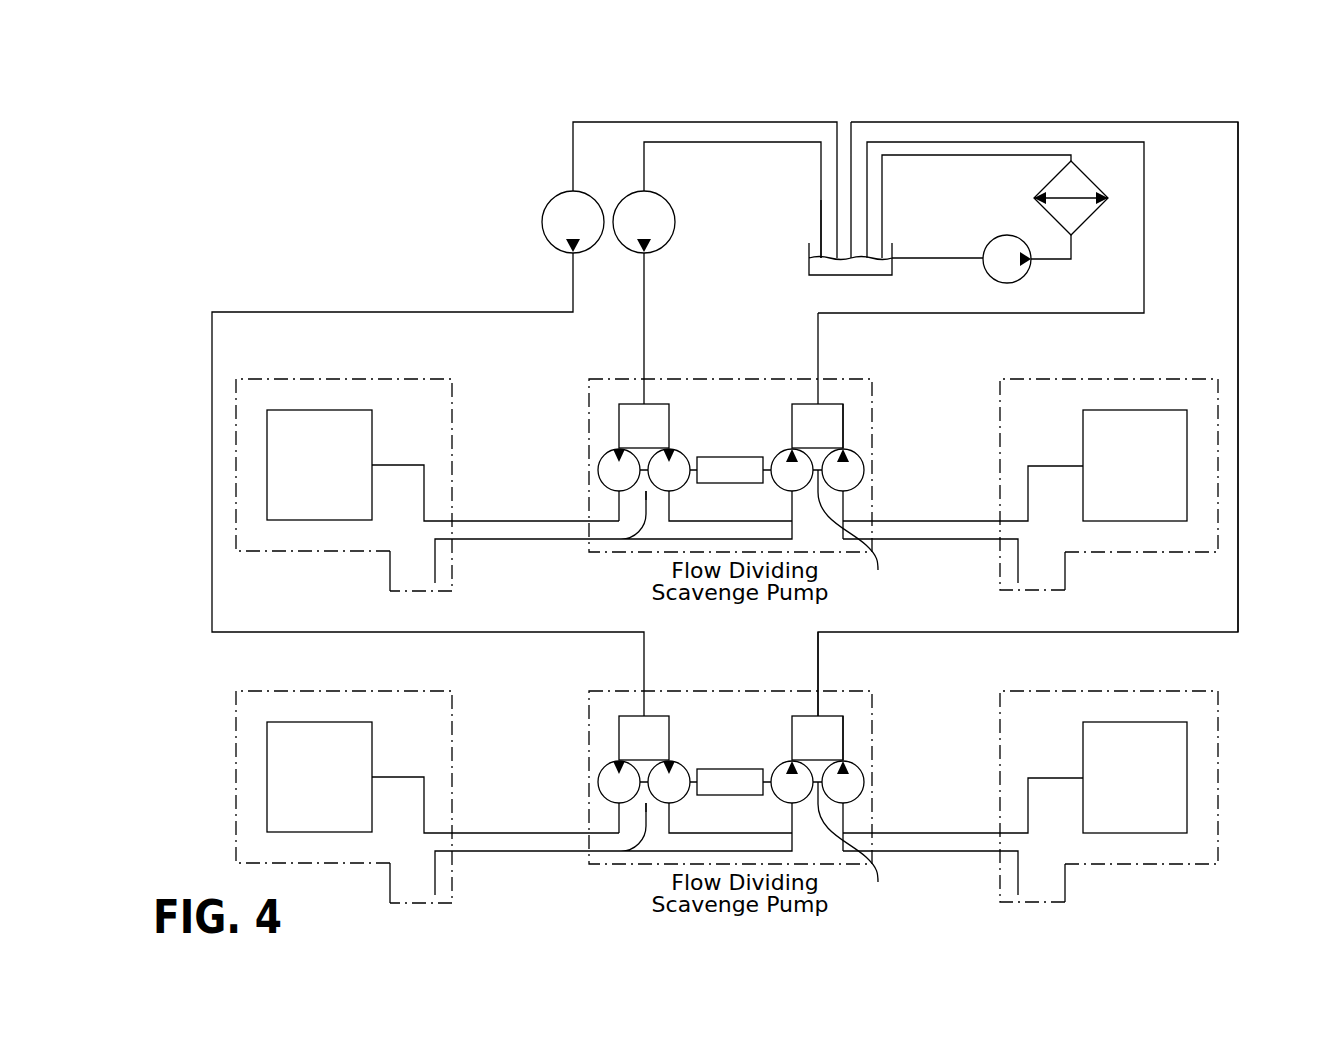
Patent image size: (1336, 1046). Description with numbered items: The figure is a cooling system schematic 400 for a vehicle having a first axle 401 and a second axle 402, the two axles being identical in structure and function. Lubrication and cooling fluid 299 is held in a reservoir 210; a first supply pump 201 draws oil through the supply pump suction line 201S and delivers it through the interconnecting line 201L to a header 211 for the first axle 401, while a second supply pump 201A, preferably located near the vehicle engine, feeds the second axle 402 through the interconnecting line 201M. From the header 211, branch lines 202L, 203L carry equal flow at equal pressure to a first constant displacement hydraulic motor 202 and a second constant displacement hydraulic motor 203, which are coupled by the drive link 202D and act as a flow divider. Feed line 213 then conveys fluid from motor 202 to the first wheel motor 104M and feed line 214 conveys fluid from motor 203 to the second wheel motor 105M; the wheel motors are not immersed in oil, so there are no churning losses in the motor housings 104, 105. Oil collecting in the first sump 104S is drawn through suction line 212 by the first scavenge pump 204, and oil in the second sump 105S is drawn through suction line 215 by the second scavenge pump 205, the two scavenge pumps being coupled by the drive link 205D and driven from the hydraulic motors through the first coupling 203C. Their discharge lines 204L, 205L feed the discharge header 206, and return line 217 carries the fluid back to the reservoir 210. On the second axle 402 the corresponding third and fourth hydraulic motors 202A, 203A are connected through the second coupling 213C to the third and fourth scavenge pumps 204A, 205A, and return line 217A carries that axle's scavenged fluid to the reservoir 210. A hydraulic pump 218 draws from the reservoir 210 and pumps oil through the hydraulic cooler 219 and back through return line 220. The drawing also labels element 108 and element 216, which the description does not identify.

The cooling system schematic 400 is at (1203, 105).
The first axle 401 is at (1215, 346).
The second axle 402 is at (1215, 665).
The motor housing 104 is at (236, 462).
The first wheel motor 104M is at (277, 427).
The first sump 104S is at (398, 592).
The motor housing 105 is at (1218, 492).
The second wheel motor 105M is at (1175, 432).
The second sump 105S is at (1030, 590).
The motor supply line 108 is at (590, 473).
The first supply pump 201 is at (674, 208).
The second supply pump 201A is at (551, 211).
The supply pump suction line 201S is at (645, 168).
The interconnecting line 201L is at (645, 278).
The interconnecting line 201M is at (212, 605).
The first constant displacement hydraulic motor 202 is at (600, 455).
The third hydraulic motor 202A is at (565, 761).
The branch line 202L is at (613, 437).
The drive link 202D is at (588, 540).
The second constant displacement hydraulic motor 203 is at (670, 450).
The fourth hydraulic motor 203A is at (681, 707).
The branch line 203L is at (670, 424).
The first coupling 203C is at (733, 457).
The first scavenge pump 204 is at (778, 443).
The third scavenge pump 204A is at (774, 707).
The scavenge pump discharge line 204L is at (792, 404).
The second scavenge pump 205 is at (863, 458).
The fourth scavenge pump 205A is at (896, 761).
The scavenge pump discharge line 205L is at (845, 435).
The drive link 205D is at (865, 688).
The discharge header 206 is at (845, 404).
The reservoir 210 is at (809, 255).
The header 211 is at (633, 404).
The suction line 212 is at (493, 540).
The feed line 213 is at (498, 520).
The second coupling 213C is at (730, 758).
The feed line 214 is at (947, 520).
The suction line 215 is at (950, 540).
The fourth pump outlet line 216 is at (843, 508).
The return line 217 is at (1144, 295).
The return line 217A is at (1240, 537).
The hydraulic pump 218 is at (1025, 270).
The hydraulic cooler 219 is at (1108, 198).
The return line 220 is at (982, 155).
The lubrication and cooling fluid 299 is at (828, 258).